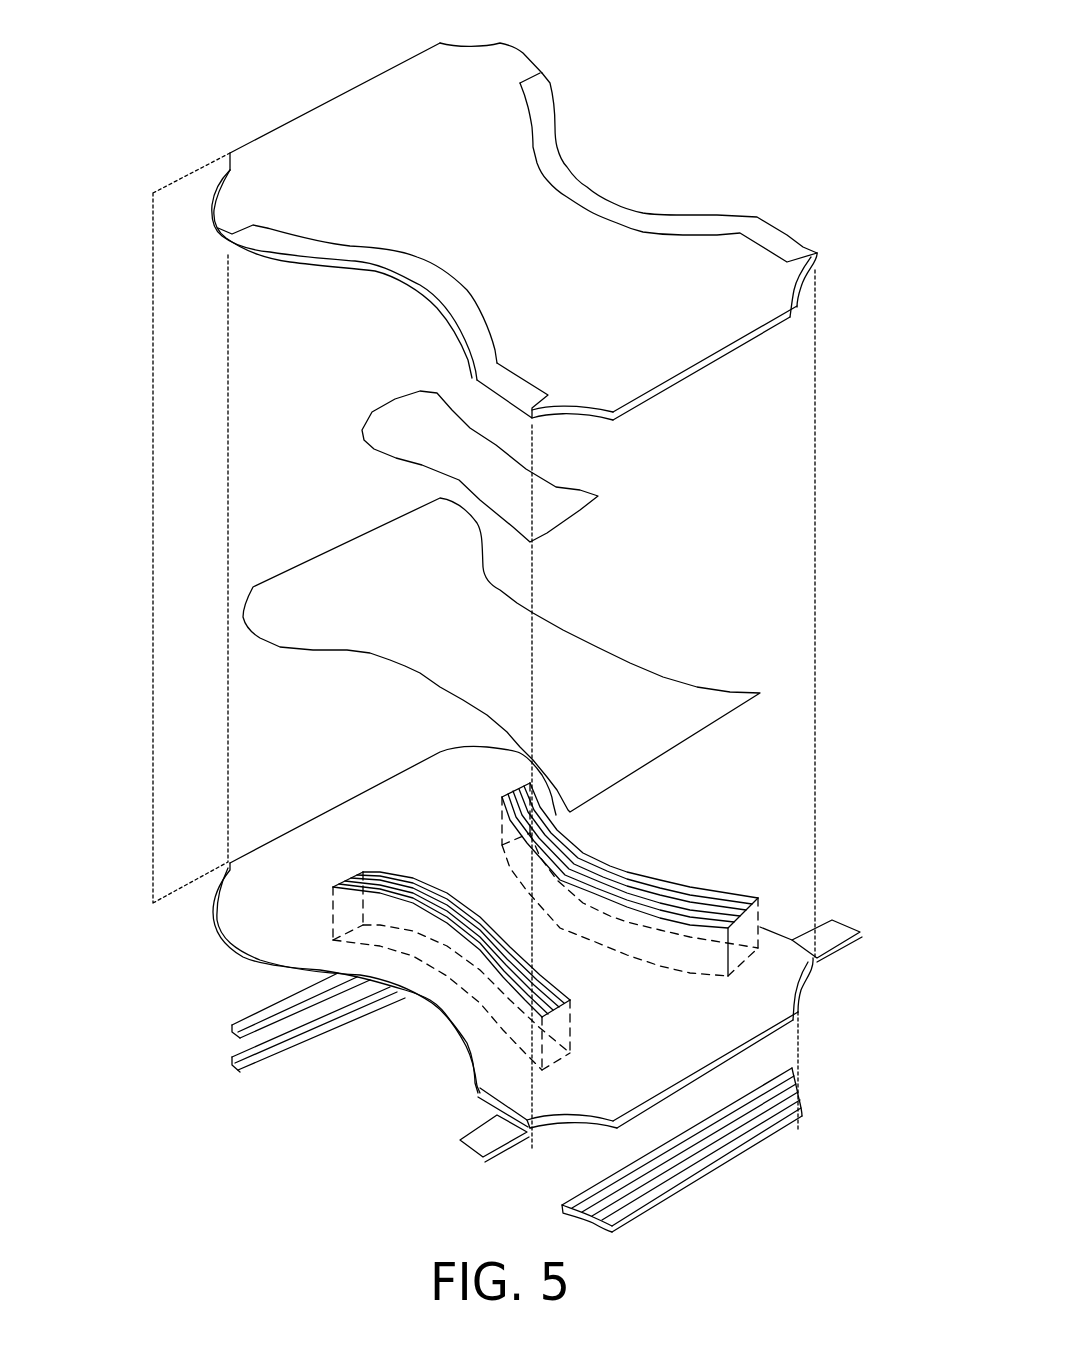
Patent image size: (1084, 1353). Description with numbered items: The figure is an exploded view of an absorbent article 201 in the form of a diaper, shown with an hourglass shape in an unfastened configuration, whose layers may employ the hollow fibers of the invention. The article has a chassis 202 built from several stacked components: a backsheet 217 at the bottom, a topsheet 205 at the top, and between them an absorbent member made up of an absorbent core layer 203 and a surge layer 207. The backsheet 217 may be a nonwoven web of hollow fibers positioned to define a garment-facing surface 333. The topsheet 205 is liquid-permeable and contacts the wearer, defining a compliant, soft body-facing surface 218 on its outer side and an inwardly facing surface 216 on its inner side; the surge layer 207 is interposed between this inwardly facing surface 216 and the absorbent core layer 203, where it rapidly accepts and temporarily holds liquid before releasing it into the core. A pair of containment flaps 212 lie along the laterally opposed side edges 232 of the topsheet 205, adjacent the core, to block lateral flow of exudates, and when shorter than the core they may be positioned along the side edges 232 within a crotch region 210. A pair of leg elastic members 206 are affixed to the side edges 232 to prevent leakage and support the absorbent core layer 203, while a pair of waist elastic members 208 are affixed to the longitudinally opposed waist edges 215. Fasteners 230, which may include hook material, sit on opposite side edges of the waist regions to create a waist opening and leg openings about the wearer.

The absorbent article 201 is at (812, 106).
The chassis 202 is at (153, 500).
The absorbent core layer 203 is at (411, 673).
The topsheet 205 is at (546, 210).
The leg elastic members 206 is at (343, 883).
The surge layer 207 is at (580, 487).
The waist elastic members 208 is at (230, 1055).
The crotch region 210 is at (385, 183).
The containment flaps 212 is at (627, 213).
The waist edges 215 is at (337, 802).
The inwardly facing surface 216 is at (676, 338).
The backsheet 217 is at (574, 967).
The body-facing surface 218 is at (507, 60).
The fasteners 230 is at (845, 922).
The side edges 232 is at (587, 190).
The garment-facing surface 333 is at (425, 1006).